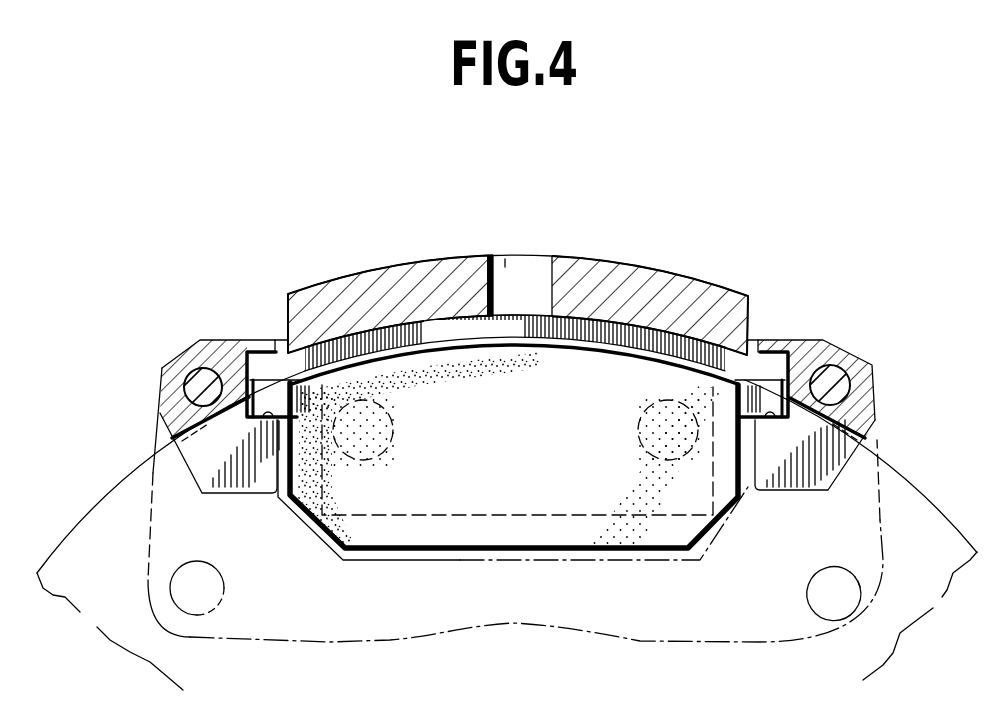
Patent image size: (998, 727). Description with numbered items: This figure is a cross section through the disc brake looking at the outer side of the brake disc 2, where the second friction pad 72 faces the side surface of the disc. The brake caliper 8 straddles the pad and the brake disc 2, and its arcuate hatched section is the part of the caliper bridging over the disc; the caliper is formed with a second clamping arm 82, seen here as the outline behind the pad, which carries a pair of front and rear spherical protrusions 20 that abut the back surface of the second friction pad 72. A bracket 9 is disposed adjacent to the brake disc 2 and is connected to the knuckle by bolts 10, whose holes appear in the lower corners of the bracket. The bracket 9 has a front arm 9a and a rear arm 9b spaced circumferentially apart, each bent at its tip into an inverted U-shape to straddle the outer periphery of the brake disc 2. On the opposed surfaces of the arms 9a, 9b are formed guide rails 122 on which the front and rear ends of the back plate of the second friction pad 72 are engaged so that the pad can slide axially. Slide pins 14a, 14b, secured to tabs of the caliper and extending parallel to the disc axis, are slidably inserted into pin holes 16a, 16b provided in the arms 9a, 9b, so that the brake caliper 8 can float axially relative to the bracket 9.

The brake disc 2 is at (930, 503).
The brake caliper 8 is at (627, 278).
The bracket 9 is at (390, 640).
The front arm 9a is at (170, 394).
The rear arm 9b is at (872, 391).
The bolts 10 is at (205, 607).
The guide rails 122 is at (266, 420).
The slide pin 14a is at (210, 372).
The slide pin 14b is at (818, 378).
The pin hole 16a is at (193, 372).
The pin hole 16b is at (836, 372).
The spherical protrusions 20 is at (365, 460).
The second friction pad 72 is at (448, 538).
The second clamping arm 82 is at (562, 518).